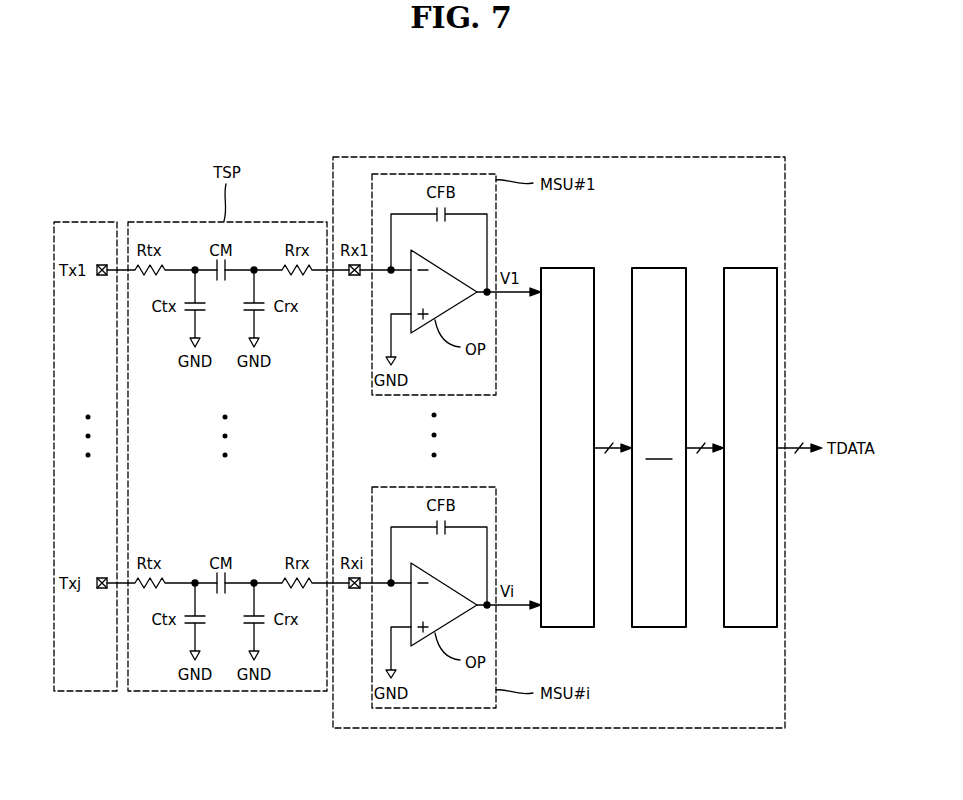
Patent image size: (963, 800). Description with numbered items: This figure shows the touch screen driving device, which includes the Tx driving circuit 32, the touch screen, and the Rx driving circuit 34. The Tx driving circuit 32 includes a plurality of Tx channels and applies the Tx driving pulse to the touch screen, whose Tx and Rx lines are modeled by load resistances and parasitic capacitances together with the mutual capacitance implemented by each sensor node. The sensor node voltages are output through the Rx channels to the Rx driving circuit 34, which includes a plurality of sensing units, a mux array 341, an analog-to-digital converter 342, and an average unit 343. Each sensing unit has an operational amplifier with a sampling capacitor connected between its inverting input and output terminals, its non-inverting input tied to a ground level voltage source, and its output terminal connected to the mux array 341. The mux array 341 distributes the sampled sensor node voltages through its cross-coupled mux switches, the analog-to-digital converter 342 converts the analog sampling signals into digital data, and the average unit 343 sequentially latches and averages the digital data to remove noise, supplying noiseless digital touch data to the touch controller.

The Tx driving circuit 32 is at (80, 221).
The Rx driving circuit 34 is at (478, 157).
The mux array 341 is at (566, 267).
The analog-to-digital converter (ADC) 342 is at (659, 267).
The average unit 343 is at (751, 267).